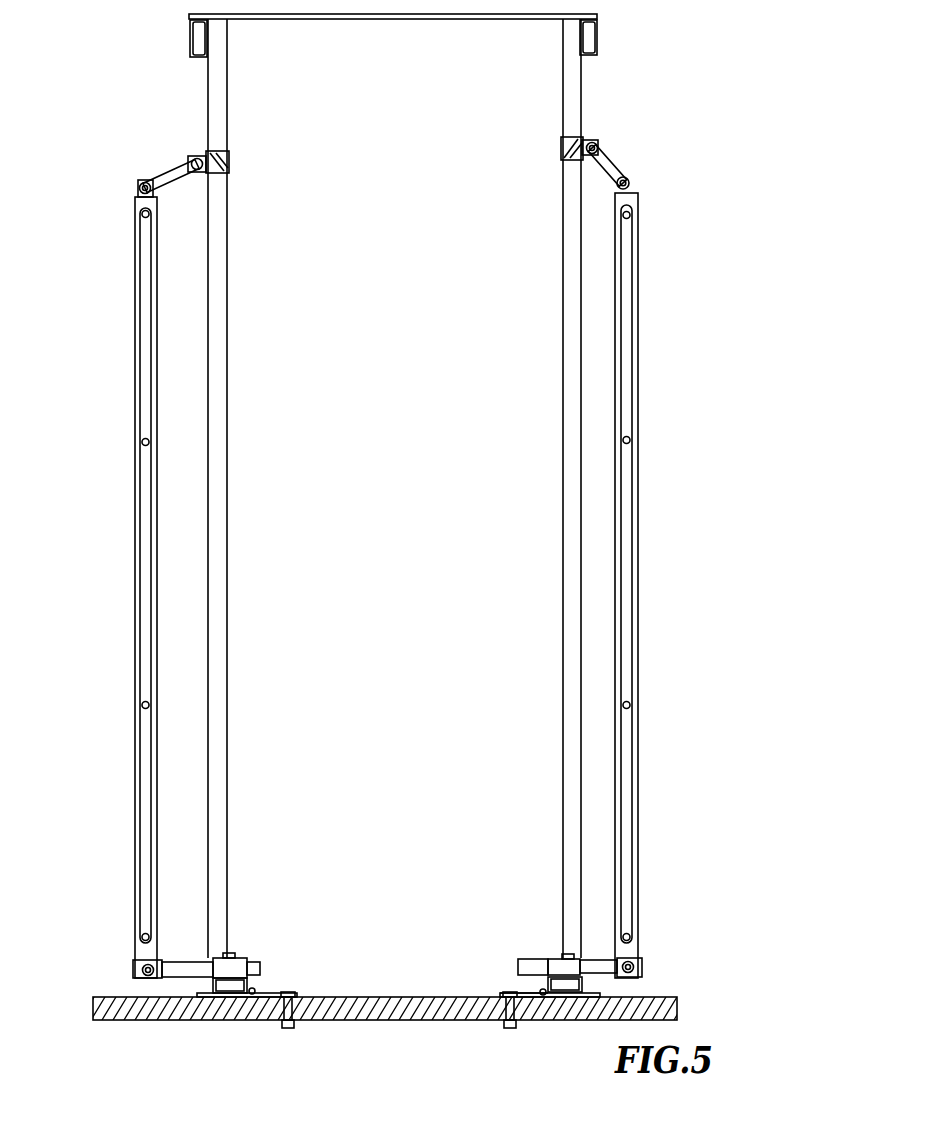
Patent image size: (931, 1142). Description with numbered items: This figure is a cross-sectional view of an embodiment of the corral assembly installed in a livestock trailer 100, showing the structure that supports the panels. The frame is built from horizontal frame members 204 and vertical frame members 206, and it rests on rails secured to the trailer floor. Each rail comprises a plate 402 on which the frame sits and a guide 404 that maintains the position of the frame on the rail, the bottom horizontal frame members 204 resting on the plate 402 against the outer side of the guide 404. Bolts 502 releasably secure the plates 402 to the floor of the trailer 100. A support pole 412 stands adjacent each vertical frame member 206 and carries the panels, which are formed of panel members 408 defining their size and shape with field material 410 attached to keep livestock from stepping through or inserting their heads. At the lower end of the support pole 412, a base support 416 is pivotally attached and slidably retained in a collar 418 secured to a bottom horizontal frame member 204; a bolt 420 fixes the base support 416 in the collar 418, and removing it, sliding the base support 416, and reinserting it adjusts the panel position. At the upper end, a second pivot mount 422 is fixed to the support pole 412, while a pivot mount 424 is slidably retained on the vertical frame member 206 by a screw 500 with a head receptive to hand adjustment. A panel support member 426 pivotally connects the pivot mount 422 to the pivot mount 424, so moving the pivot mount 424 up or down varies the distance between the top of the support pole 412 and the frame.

The trailer 100 is at (183, 1020).
The horizontal frame member 204 is at (603, 39).
The vertical frame member 206 is at (562, 493).
The plate 402 is at (530, 997).
The guide 404 is at (538, 990).
The panel member 408 is at (130, 208).
The field material 410 is at (137, 275).
The support pole 412 is at (642, 262).
The base support 416 is at (530, 957).
The collar 418 is at (552, 962).
The bolt 420 is at (233, 953).
The second pivot mount 422 is at (633, 182).
The pivot mount 424 is at (588, 138).
The panel support member 426 is at (615, 157).
The screw 500 is at (565, 148).
The bolt 502 is at (493, 1017).